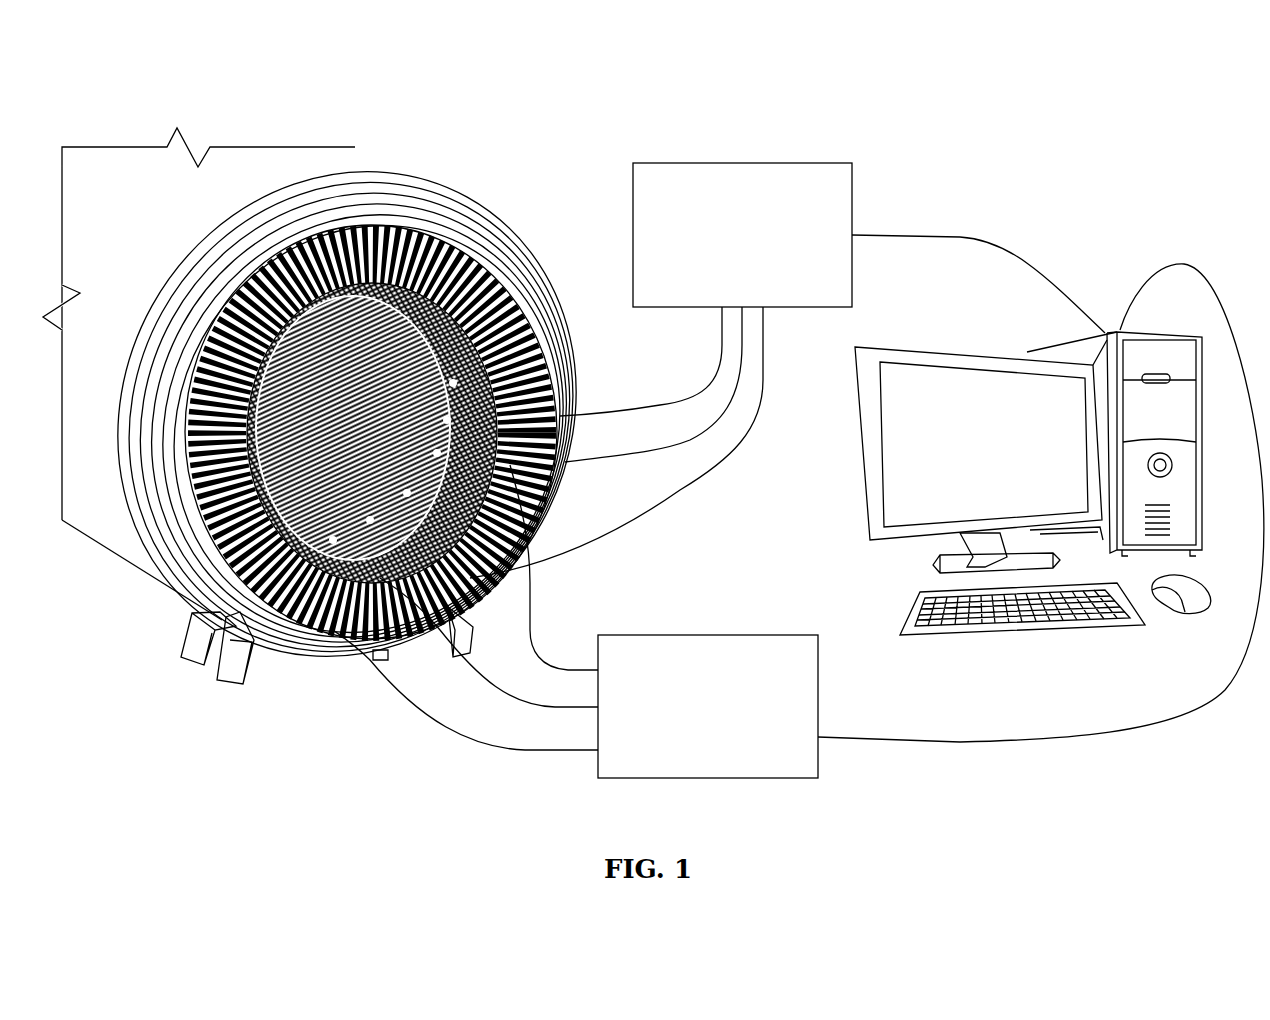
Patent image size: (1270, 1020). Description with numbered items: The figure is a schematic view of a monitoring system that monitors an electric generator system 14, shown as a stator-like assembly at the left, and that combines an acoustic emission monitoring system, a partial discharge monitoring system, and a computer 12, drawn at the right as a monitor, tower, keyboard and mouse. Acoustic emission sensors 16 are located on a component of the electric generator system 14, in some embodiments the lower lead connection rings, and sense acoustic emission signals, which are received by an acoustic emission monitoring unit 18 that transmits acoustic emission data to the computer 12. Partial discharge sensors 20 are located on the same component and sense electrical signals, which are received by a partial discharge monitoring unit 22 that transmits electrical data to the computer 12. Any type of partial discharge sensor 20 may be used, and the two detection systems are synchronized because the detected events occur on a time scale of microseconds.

The computer 12 is at (1144, 423).
The electric generator system 14 is at (262, 160).
The acoustic emission sensors 16 is at (452, 230).
The acoustic emission monitoring unit 18 is at (732, 247).
The partial discharge sensors 20 is at (455, 560).
The partial discharge monitoring unit 22 is at (695, 717).